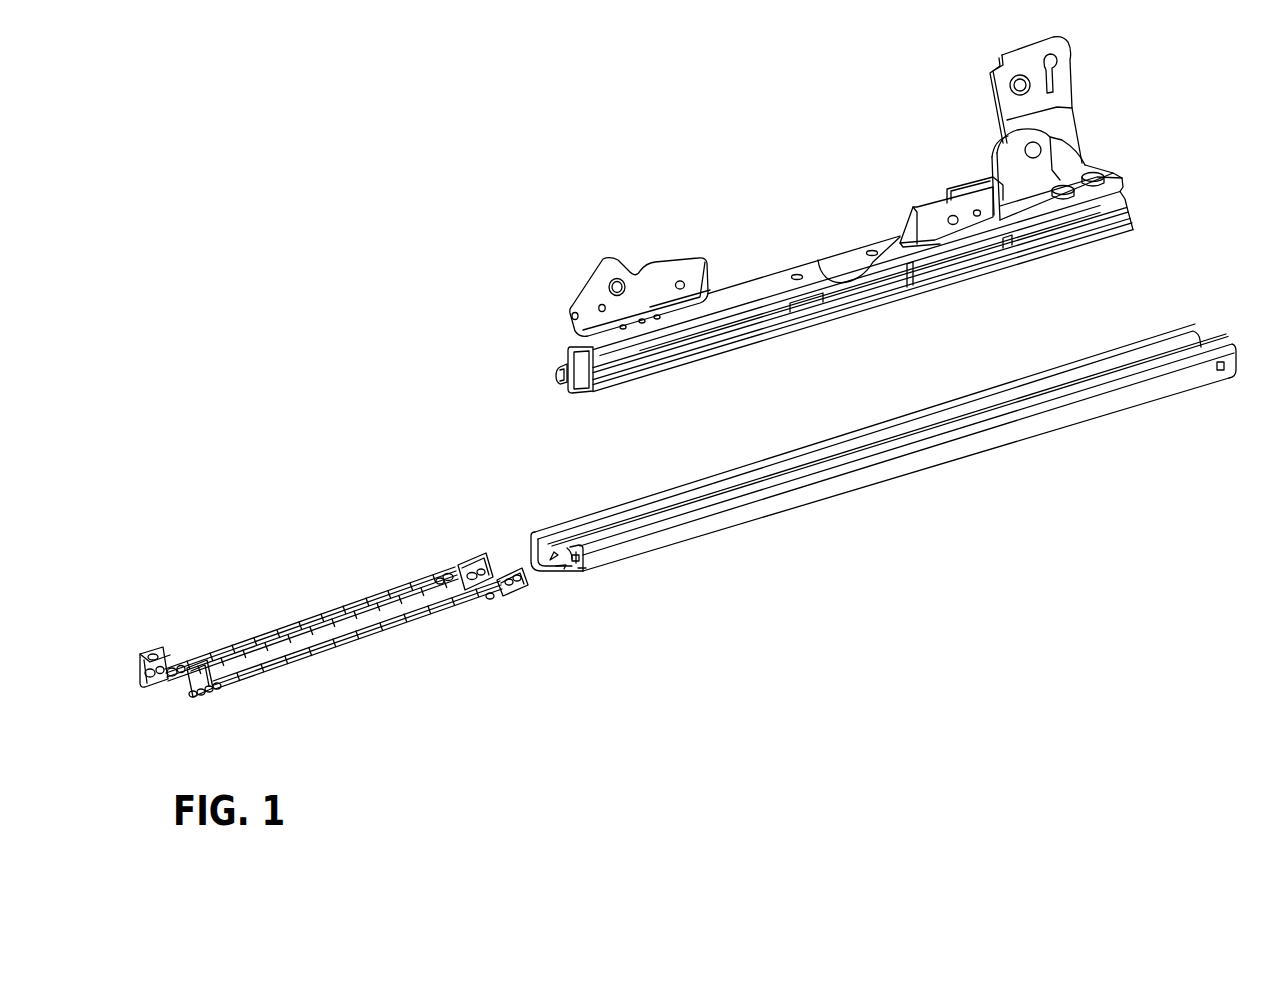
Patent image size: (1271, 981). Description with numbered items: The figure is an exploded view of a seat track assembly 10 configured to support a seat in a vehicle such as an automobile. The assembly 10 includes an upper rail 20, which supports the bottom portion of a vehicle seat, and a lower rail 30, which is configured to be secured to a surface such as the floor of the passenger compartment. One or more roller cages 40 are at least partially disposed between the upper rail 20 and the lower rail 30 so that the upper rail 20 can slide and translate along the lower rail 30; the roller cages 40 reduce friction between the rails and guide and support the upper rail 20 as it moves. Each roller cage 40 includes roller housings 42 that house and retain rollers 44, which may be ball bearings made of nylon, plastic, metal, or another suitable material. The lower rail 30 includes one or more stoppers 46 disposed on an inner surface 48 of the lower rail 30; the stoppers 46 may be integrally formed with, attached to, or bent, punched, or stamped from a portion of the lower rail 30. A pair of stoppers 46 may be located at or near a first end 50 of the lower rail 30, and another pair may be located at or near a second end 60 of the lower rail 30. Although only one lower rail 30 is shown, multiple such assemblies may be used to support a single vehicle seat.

The seat track assembly 10 is at (496, 266).
The upper rail 20 is at (752, 318).
The lower rail 30 is at (870, 474).
The roller cage 40 is at (331, 608).
The roller housing 42 is at (145, 645).
The roller 44 is at (189, 659).
The stopper 46 is at (556, 551).
The inner surface 48 is at (560, 578).
The first end 50 is at (591, 584).
The second end 60 is at (1222, 390).